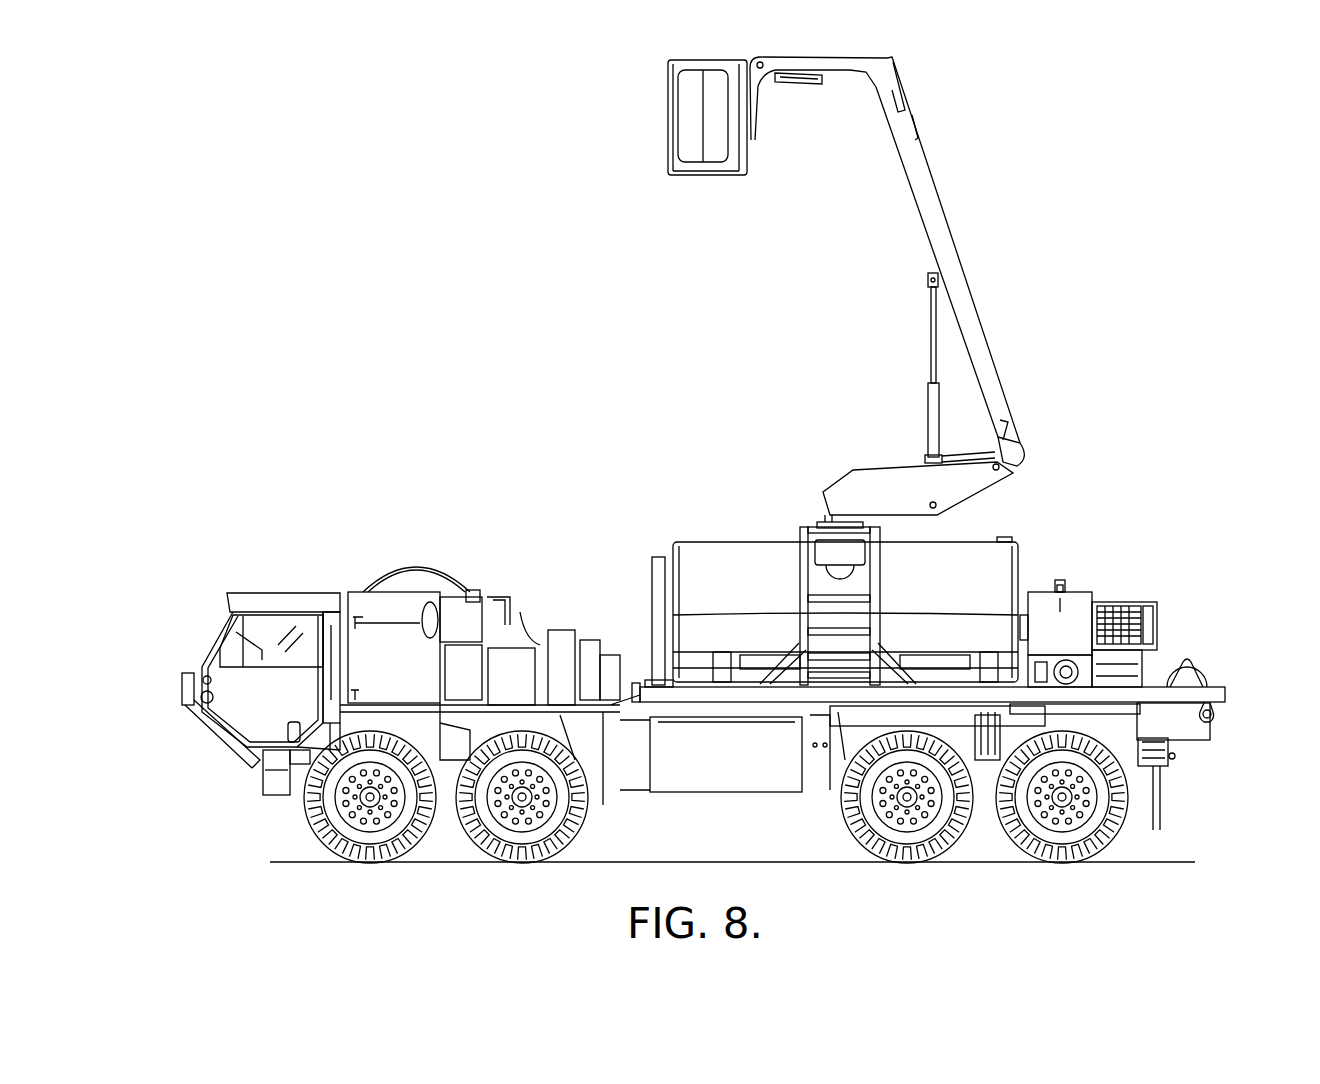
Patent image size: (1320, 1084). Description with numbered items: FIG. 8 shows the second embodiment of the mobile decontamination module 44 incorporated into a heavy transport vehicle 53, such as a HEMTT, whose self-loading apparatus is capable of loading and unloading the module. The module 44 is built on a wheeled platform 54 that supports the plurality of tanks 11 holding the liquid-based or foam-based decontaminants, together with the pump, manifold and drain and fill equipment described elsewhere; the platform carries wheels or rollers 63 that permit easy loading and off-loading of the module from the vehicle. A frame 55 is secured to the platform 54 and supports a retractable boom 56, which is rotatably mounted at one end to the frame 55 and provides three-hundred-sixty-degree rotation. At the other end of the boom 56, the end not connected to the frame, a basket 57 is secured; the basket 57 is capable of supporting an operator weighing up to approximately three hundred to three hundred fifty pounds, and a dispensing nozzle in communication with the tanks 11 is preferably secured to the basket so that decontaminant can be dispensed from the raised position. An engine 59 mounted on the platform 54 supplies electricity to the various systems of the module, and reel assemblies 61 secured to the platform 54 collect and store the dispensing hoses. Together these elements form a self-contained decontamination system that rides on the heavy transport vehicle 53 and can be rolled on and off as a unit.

The tanks 11 is at (717, 538).
The mobile decontamination module 44 is at (645, 592).
The heavy transport vehicle 53 is at (215, 648).
The wheeled platform 54 is at (1225, 697).
The frame 55 is at (802, 527).
The retractable boom 56 is at (957, 245).
The basket 57 is at (668, 87).
The engine 59 is at (1093, 600).
The reel assemblies 61 is at (1203, 660).
The wheels or rollers 63 is at (1222, 712).